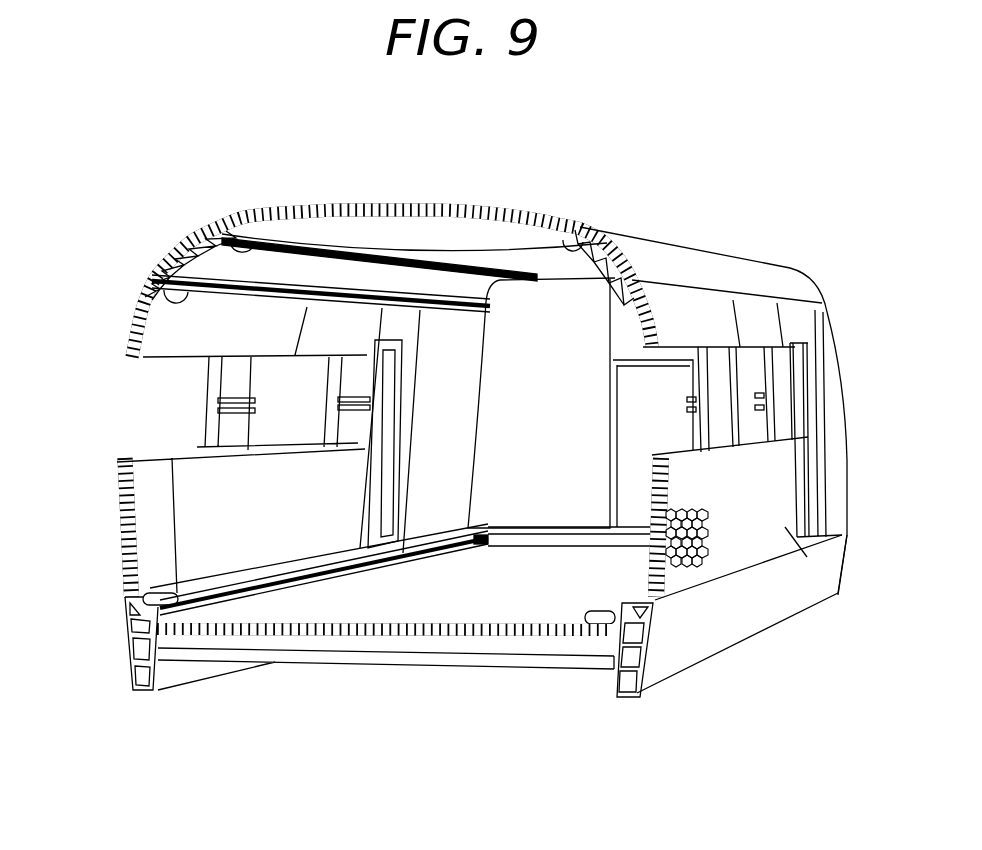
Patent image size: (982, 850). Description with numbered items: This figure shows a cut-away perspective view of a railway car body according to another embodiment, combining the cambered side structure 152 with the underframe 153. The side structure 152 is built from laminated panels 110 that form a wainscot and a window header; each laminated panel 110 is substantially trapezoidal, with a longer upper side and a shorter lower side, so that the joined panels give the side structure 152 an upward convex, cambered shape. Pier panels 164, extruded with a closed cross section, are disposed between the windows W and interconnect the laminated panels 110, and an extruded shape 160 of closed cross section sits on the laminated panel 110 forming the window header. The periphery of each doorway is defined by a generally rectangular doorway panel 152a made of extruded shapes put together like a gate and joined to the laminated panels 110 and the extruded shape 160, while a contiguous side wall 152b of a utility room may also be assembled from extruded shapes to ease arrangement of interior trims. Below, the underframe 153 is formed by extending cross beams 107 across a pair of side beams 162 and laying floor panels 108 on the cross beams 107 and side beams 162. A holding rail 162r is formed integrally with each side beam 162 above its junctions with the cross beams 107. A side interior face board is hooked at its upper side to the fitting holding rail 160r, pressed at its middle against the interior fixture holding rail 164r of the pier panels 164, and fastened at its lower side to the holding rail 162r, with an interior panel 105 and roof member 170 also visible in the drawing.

The interior wall panel 105 is at (567, 302).
The cross beam 107 is at (388, 648).
The floor panel 108 is at (293, 636).
The laminated panel 110 is at (838, 597).
The side structure 152 is at (856, 478).
The doorway panel 152a is at (797, 333).
The side wall of utility room 152b is at (823, 360).
The underframe 153 is at (480, 680).
The extruded shape 160 is at (192, 234).
The fitting holding rail 160r is at (148, 283).
The side beam 162 is at (172, 690).
The holding rail 162r is at (132, 607).
The pier panel 164 is at (212, 385).
The interior fixture holding rail 164r is at (240, 416).
The roof panel 170 is at (463, 208).
The window W is at (112, 363).